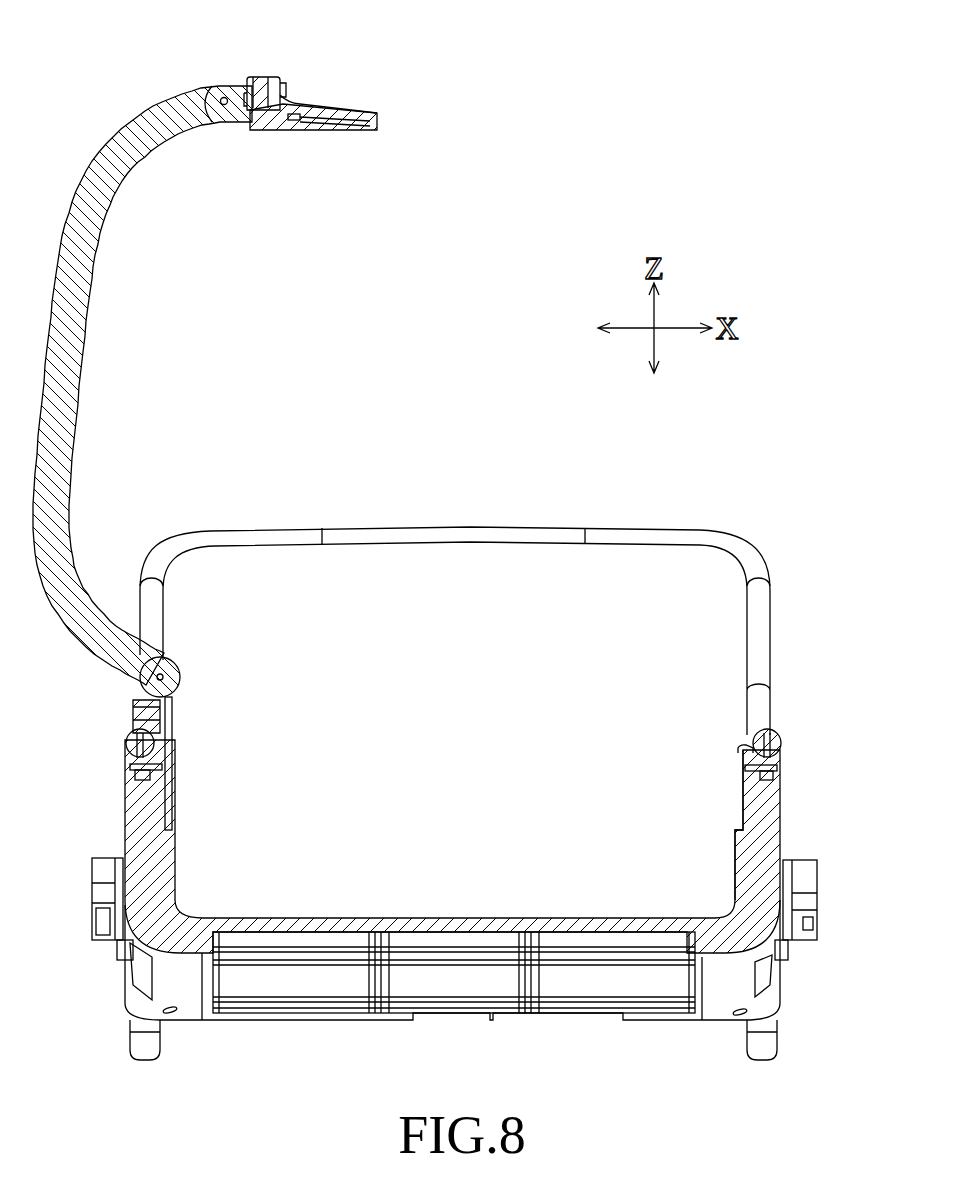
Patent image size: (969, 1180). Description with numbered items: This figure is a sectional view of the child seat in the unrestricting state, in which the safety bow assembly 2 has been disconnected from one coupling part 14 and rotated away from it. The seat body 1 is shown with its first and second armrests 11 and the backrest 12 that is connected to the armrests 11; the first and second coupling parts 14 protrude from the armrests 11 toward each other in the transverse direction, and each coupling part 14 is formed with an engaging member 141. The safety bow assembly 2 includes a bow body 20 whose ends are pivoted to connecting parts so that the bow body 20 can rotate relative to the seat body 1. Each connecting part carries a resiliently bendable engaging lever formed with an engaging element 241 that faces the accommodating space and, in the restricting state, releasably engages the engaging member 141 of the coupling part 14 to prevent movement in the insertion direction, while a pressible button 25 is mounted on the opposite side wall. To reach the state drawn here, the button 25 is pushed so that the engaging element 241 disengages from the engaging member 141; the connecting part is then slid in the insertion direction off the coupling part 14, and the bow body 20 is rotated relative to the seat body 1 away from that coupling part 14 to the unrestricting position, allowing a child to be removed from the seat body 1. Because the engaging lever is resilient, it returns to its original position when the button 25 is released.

The seat body 1 is at (461, 793).
The safety bow assembly 2 is at (204, 357).
The armrest 11 is at (130, 806).
The backrest 12 is at (765, 600).
The coupling part 14 is at (743, 801).
The engaging member 141 is at (746, 748).
The bow body 20 is at (98, 294).
The engaging element 241 is at (303, 122).
The pressible button 25 is at (264, 78).